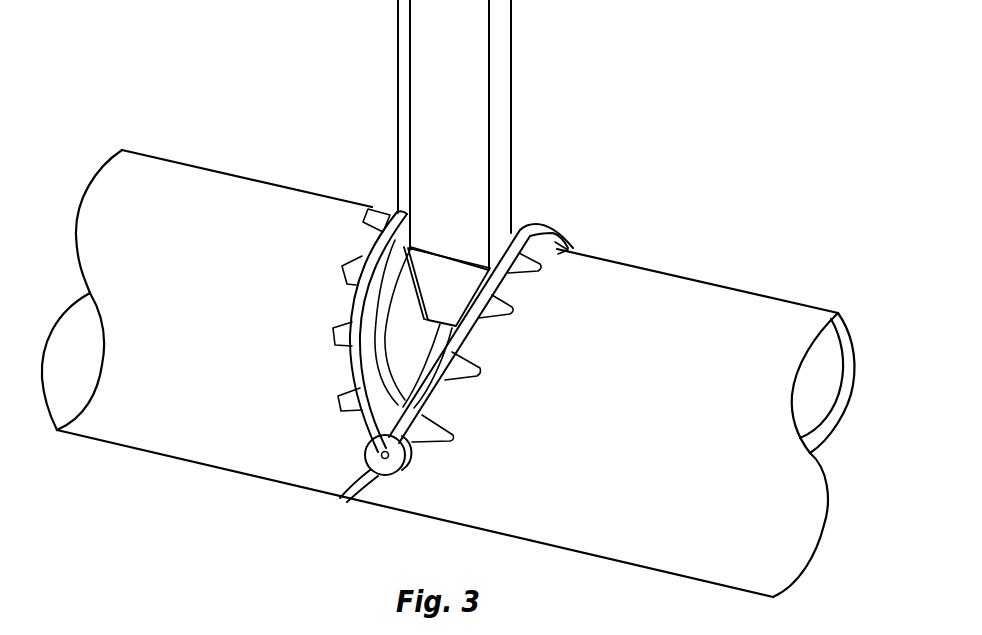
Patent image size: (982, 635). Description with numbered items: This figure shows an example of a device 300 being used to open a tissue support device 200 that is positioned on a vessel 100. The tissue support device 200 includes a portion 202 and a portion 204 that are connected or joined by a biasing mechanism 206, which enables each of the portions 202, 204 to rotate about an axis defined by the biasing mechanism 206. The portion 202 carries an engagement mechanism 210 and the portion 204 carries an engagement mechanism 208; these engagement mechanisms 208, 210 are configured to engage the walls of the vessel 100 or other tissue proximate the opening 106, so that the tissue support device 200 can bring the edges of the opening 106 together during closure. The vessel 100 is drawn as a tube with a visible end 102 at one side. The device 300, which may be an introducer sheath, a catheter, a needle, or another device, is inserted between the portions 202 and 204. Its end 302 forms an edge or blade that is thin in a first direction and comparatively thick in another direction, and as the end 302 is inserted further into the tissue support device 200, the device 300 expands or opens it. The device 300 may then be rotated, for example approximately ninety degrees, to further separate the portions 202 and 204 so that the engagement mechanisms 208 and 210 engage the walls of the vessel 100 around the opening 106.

The vessel 100 is at (702, 282).
The pipe opening 102 is at (805, 390).
The opening 106 is at (518, 229).
The tissue support device 200 is at (522, 450).
The portion 202 is at (370, 215).
The portion 204 is at (533, 230).
The biasing mechanism 206 is at (347, 494).
The engagement mechanism 208 is at (604, 257).
The engagement mechanism 210 is at (331, 212).
The device 300 is at (513, 55).
The end 302 is at (370, 464).